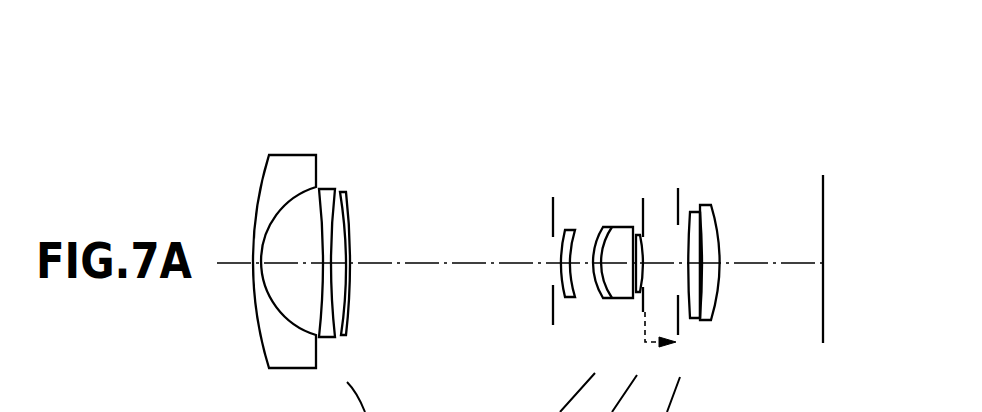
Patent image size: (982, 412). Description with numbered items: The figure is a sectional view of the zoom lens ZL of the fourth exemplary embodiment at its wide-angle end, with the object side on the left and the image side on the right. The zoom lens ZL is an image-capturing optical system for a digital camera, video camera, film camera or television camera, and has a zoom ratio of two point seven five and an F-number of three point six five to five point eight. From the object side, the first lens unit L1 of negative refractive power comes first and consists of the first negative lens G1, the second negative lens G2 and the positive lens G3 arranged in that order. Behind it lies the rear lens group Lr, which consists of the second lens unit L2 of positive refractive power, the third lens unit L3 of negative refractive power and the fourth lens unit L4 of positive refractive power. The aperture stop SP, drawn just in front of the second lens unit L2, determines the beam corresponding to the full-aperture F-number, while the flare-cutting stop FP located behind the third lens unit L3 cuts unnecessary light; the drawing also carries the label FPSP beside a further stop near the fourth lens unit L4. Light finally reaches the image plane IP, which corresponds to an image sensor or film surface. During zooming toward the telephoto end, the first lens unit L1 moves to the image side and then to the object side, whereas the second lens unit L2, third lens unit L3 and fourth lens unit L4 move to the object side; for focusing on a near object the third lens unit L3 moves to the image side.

The zoom lens ZL is at (886, 353).
The first lens unit L1 is at (538, 127).
The first negative lens G1 is at (317, 163).
The second negative lens G2 is at (328, 188).
The positive lens G3 is at (348, 225).
The aperture stop SP is at (552, 213).
The rear lens group Lr is at (797, 74).
The second lens unit L2 is at (629, 127).
The third lens unit L3 is at (658, 127).
The fourth lens unit L4 is at (727, 127).
The flare-cutting stop FP is at (640, 302).
The flare cut stop FPSP is at (679, 195).
The image plane IP is at (824, 222).